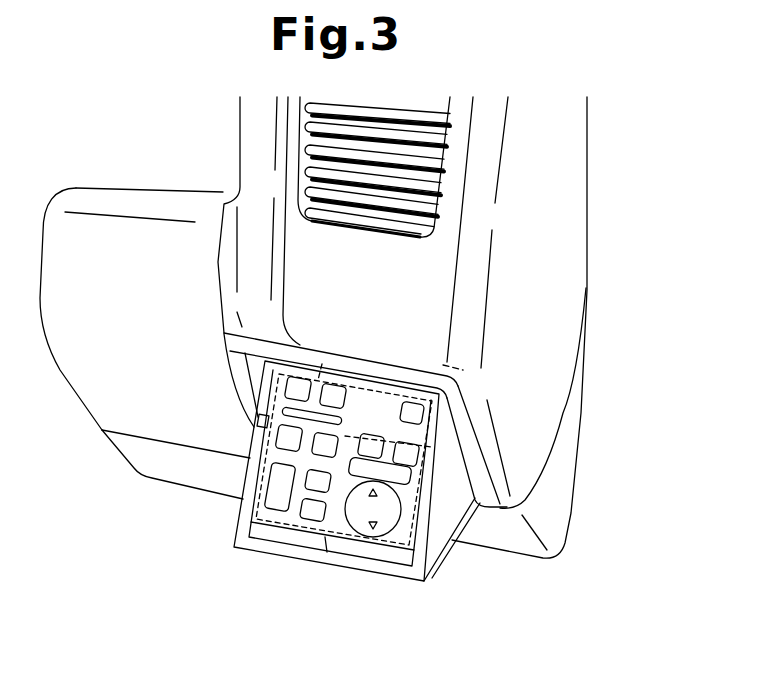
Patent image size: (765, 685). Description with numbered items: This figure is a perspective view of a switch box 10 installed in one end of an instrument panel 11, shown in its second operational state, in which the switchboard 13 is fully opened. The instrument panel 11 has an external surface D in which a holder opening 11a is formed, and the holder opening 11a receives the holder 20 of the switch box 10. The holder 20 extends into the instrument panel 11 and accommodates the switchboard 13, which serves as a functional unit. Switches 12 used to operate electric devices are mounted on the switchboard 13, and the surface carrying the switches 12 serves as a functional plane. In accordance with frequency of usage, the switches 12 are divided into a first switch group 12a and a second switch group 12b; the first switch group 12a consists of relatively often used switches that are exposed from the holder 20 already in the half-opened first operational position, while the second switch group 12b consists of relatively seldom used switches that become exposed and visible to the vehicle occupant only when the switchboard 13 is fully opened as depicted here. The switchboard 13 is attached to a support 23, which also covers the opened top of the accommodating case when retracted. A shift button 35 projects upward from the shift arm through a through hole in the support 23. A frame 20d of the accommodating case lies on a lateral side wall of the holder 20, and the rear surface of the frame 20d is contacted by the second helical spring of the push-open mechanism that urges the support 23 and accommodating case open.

The switch box 10 is at (155, 390).
The instrument panel 11 is at (606, 210).
The holder opening 11a is at (488, 473).
The switches 12 is at (432, 303).
The first switch group 12a is at (422, 378).
The second switch group 12b is at (322, 364).
The switchboard 13 is at (292, 518).
The holder 20 is at (225, 356).
The frame 20d is at (452, 392).
The support 23 is at (257, 483).
The shift button 35 is at (258, 421).
The external surface D is at (135, 237).